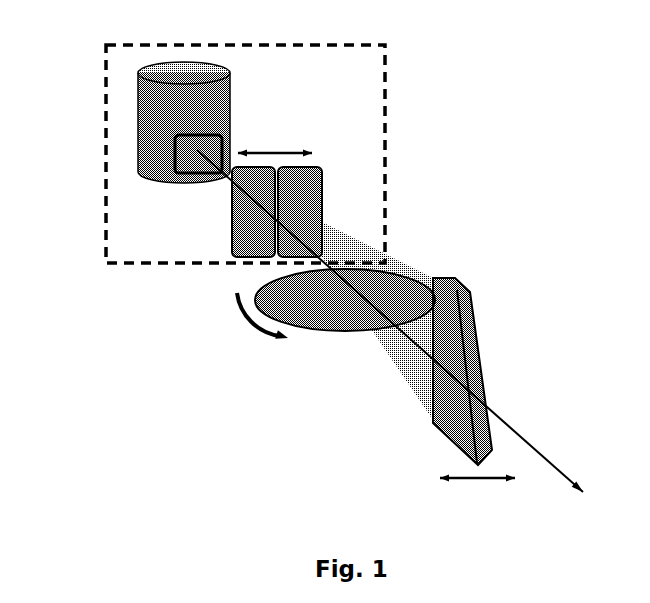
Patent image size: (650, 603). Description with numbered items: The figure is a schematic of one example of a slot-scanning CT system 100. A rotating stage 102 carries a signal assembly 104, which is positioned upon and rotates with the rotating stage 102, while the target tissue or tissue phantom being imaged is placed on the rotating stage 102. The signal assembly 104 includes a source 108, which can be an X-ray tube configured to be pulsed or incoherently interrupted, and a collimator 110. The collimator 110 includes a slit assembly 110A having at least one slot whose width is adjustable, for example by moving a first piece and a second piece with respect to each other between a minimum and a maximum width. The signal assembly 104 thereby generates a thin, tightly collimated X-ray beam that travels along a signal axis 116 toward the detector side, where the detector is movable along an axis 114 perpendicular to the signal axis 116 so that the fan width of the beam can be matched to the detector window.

The slot-scanning CT system 100 is at (318, 268).
The rotating stage 102 is at (323, 333).
The signal assembly 104 is at (104, 178).
The source 108 is at (232, 105).
The collimator 110 is at (289, 226).
The slit assembly 110A is at (305, 220).
The axis 114 is at (463, 470).
The signal axis 116 is at (573, 463).